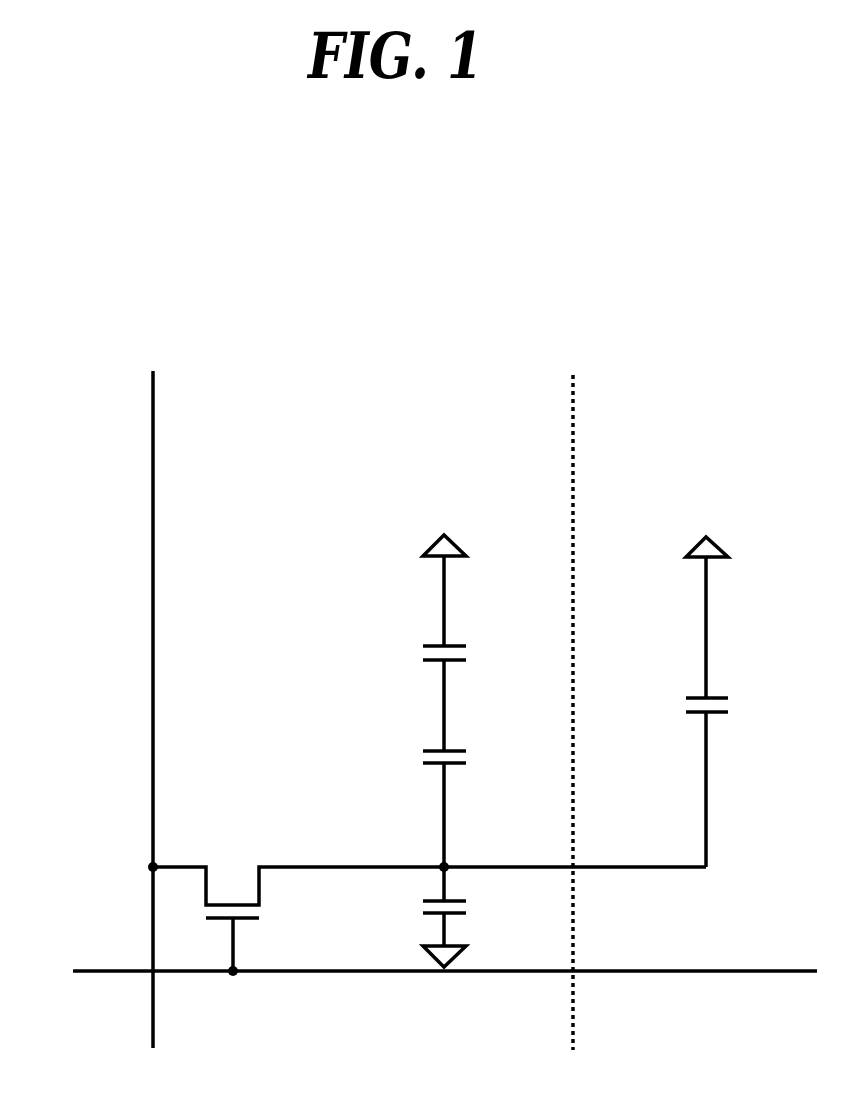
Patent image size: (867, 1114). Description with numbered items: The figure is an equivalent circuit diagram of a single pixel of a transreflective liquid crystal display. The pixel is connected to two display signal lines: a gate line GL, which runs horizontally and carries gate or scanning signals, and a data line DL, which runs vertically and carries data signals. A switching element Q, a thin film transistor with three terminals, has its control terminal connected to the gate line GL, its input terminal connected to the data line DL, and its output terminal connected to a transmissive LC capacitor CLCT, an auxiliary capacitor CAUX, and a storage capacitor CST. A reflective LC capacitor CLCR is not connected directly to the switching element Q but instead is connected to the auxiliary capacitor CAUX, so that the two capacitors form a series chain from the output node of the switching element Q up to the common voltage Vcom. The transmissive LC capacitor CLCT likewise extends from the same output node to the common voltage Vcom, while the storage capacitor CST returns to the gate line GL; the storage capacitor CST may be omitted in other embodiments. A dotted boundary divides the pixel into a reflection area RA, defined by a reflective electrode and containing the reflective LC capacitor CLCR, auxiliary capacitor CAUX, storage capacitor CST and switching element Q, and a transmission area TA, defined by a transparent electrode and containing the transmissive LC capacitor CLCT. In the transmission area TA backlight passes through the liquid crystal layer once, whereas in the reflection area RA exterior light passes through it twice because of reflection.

The data line DL is at (153, 687).
The gate line GL is at (420, 968).
The switching element Q is at (427, 898).
The common voltage Vcom is at (574, 516).
The reflective LC capacitor CLCR is at (408, 630).
The auxiliary capacitor CAUX is at (408, 786).
The storage capacitor CST is at (474, 917).
The transmissive LC capacitor CLCT is at (745, 712).
The reflection area RA is at (425, 712).
The transmission area TA is at (616, 712).